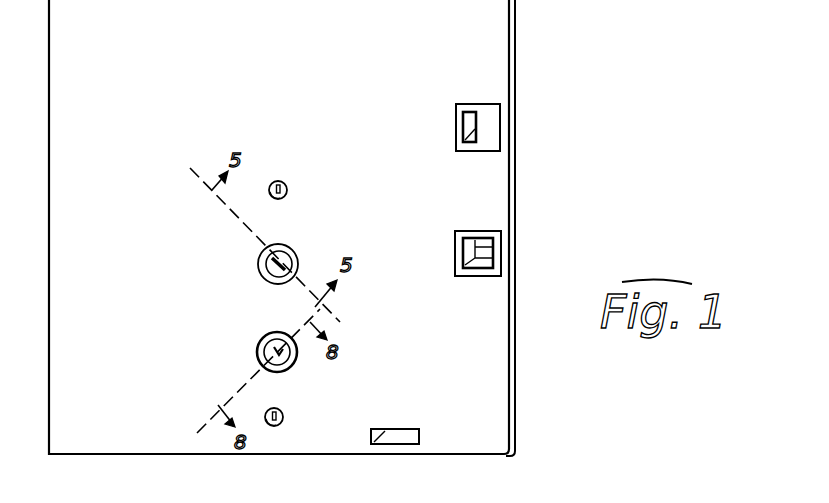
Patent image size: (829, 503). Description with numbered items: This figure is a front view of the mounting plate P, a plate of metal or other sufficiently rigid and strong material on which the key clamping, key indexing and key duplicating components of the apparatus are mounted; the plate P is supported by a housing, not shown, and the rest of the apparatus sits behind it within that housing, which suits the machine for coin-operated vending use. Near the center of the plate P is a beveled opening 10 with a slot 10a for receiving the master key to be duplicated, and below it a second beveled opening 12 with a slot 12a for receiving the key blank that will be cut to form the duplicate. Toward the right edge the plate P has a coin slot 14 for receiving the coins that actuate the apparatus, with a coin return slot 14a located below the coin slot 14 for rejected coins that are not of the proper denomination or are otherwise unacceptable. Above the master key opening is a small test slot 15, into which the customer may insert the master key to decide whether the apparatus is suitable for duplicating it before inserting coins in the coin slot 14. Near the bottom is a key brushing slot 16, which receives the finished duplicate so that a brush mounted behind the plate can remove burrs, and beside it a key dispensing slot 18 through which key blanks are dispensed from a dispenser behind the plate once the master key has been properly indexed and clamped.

The mounting plate P is at (147, 81).
The beveled opening 10 is at (258, 268).
The slot 10a is at (288, 251).
The beveled opening 12 is at (275, 338).
The slot 12a is at (260, 348).
The coin slot 14 is at (463, 122).
The coin return slot 14a is at (487, 248).
The test slot 15 is at (288, 190).
The key brushing slot 16 is at (284, 417).
The key dispensing slot 18 is at (407, 430).